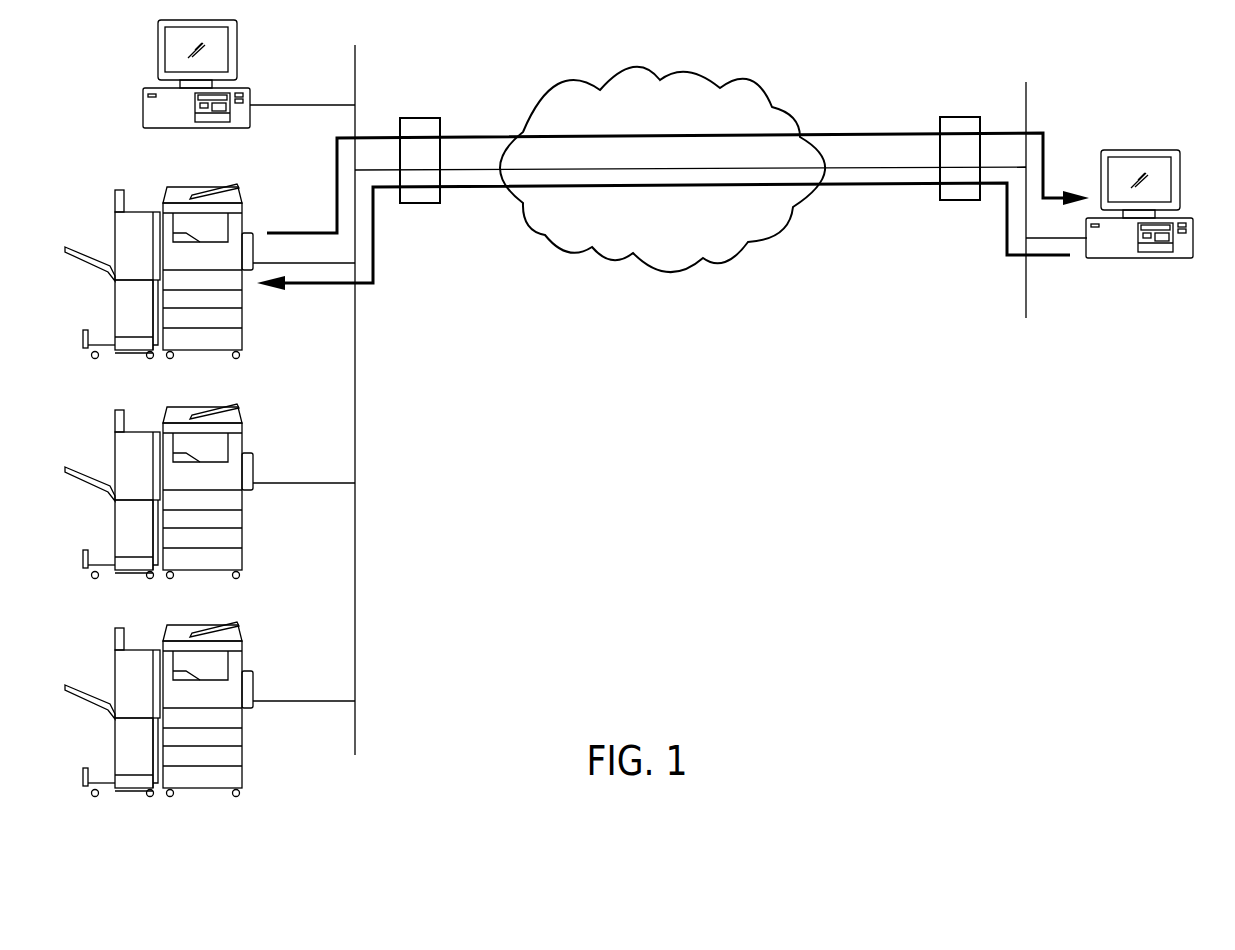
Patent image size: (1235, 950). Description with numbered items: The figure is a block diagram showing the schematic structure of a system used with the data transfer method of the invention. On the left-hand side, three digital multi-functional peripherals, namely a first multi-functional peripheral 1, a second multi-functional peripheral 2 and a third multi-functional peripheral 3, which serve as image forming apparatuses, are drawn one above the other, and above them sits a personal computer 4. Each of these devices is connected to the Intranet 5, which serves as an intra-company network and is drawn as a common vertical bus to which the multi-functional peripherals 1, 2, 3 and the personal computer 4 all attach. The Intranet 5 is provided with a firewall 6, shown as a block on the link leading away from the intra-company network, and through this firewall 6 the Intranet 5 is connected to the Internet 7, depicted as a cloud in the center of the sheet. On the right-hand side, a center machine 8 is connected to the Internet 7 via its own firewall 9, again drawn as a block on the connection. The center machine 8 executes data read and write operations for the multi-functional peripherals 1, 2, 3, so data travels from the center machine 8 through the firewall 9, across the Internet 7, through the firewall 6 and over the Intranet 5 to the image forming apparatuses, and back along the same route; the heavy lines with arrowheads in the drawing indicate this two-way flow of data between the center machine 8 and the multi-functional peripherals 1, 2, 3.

The digital multi-functional peripheral MFP1 1 is at (243, 202).
The digital multi-functional peripheral MFP2 2 is at (243, 422).
The digital multi-functional peripheral MFP3 3 is at (243, 640).
The personal computer 4 is at (249, 88).
The Intranet 5 is at (356, 372).
The firewall 6 is at (421, 117).
The Internet 7 is at (667, 273).
The center machine 8 is at (1191, 217).
The firewall 9 is at (960, 115).